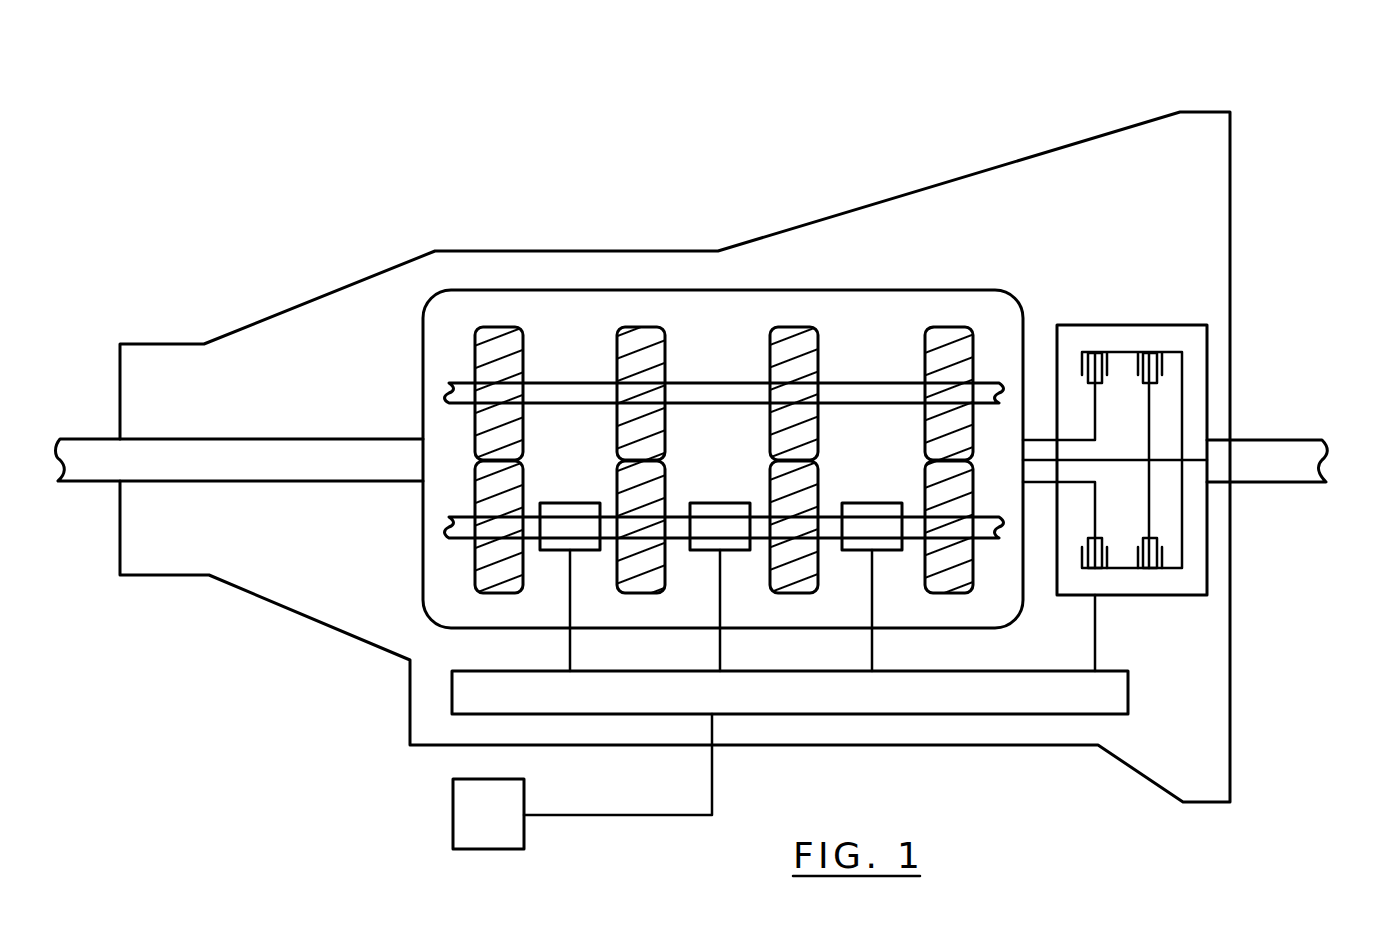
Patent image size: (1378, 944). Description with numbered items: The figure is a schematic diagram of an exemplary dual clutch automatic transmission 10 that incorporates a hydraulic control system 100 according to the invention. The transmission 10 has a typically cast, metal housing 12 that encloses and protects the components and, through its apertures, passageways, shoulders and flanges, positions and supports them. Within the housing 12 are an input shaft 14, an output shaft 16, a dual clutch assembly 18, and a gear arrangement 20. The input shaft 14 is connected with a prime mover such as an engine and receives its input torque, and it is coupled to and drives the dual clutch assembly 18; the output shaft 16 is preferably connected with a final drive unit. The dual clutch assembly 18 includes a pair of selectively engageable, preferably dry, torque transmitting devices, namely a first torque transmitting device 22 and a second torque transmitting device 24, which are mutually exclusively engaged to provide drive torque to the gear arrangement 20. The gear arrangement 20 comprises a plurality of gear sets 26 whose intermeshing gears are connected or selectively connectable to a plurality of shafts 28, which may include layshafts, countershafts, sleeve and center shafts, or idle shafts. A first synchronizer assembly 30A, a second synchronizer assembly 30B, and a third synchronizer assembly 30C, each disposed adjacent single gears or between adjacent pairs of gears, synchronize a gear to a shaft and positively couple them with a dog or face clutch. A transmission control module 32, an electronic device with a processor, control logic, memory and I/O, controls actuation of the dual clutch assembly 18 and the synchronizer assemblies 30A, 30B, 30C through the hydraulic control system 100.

The dual clutch automatic transmission 10 is at (1298, 108).
The housing 12 is at (505, 251).
The input shaft 14 is at (1287, 437).
The output shaft 16 is at (74, 437).
The dual clutch assembly 18 is at (1145, 325).
The gear arrangement 20 is at (478, 290).
The first torque transmitting device 22 is at (1107, 552).
The second torque transmitting device 24 is at (1165, 557).
The gear sets 26 is at (512, 327).
The shafts 28 is at (580, 383).
The first synchronizer assembly 30A is at (592, 539).
The second synchronizer assembly 30B is at (742, 539).
The third synchronizer assembly 30C is at (894, 539).
The transmission control module 32 is at (503, 827).
The hydraulic control system 100 is at (802, 705).